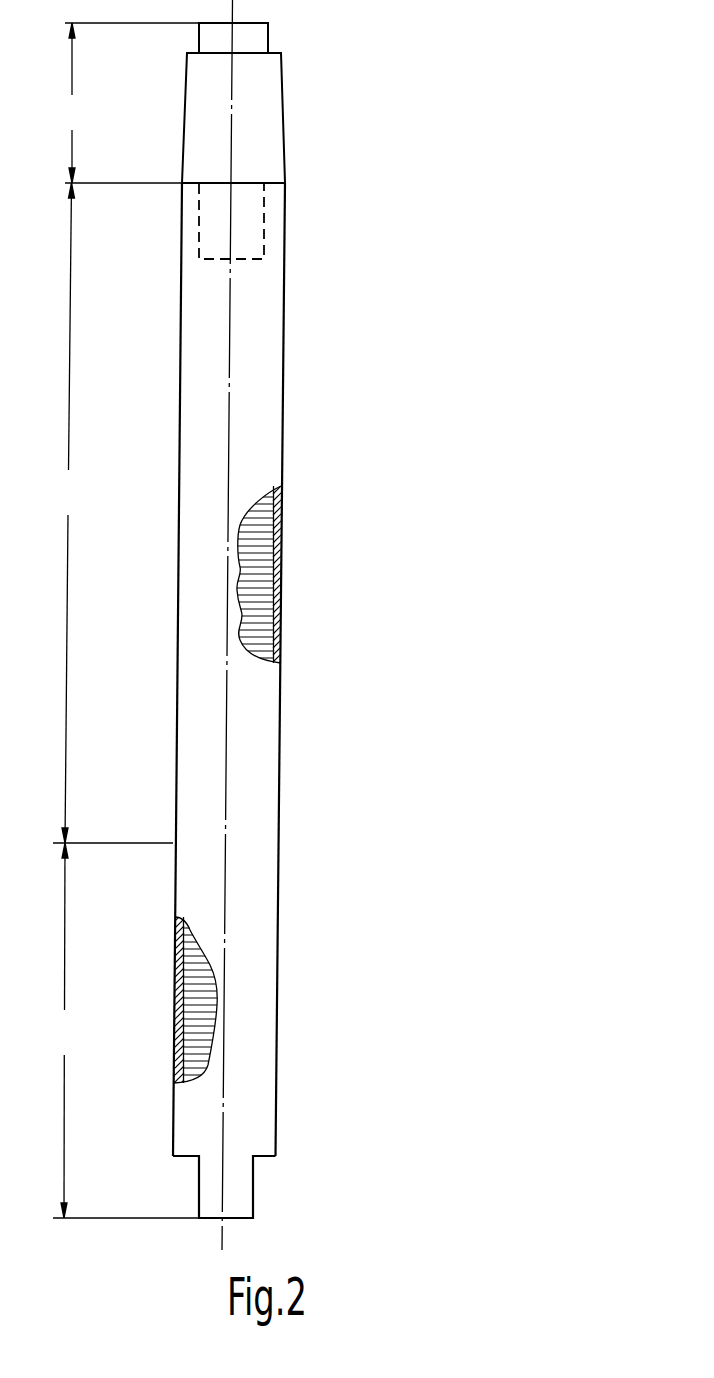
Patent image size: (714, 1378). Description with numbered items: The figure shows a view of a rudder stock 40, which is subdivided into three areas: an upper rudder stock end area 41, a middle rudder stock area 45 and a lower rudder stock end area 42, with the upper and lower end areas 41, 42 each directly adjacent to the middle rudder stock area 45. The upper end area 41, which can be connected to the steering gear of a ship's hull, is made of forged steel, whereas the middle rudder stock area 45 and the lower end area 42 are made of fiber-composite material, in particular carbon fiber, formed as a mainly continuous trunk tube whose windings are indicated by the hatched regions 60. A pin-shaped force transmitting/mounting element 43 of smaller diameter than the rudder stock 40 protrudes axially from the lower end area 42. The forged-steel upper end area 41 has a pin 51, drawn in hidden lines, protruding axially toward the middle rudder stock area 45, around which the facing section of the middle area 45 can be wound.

The rudder stock 40 is at (288, 450).
The upper rudder stock end area 41 is at (132, 103).
The lower rudder stock end area 42 is at (126, 1030).
The pin-shaped force transmitting/mounting element 43 is at (238, 1186).
The middle rudder stock area 45 is at (113, 513).
The pin 51 is at (248, 232).
The windings of the fiber-composite material 60 is at (256, 600).